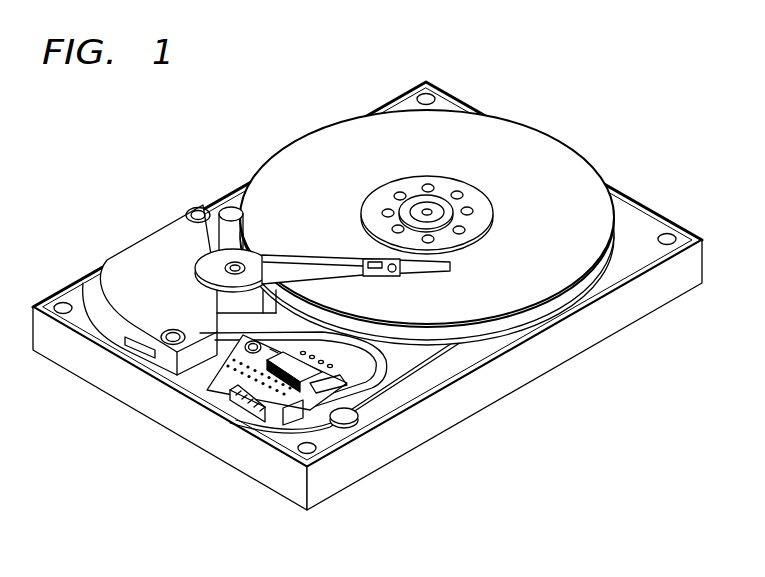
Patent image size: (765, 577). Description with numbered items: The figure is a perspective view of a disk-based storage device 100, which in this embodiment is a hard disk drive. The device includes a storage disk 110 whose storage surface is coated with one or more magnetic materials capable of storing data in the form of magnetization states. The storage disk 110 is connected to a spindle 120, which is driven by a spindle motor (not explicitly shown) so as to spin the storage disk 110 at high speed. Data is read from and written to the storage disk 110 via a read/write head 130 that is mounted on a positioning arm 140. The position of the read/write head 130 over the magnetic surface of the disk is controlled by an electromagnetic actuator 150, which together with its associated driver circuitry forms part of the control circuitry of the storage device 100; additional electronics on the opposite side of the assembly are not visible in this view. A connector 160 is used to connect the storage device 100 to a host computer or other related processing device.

The disk-based storage device 100 is at (150, 124).
The storage disk 110 is at (540, 150).
The spindle 120 is at (452, 208).
The read/write head 130 is at (420, 265).
The positioning arm 140 is at (298, 258).
The electromagnetic actuator 150 is at (137, 257).
The connector 160 is at (246, 387).